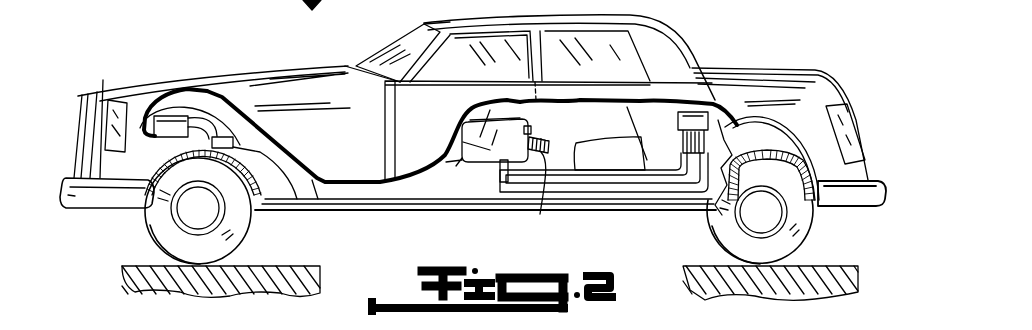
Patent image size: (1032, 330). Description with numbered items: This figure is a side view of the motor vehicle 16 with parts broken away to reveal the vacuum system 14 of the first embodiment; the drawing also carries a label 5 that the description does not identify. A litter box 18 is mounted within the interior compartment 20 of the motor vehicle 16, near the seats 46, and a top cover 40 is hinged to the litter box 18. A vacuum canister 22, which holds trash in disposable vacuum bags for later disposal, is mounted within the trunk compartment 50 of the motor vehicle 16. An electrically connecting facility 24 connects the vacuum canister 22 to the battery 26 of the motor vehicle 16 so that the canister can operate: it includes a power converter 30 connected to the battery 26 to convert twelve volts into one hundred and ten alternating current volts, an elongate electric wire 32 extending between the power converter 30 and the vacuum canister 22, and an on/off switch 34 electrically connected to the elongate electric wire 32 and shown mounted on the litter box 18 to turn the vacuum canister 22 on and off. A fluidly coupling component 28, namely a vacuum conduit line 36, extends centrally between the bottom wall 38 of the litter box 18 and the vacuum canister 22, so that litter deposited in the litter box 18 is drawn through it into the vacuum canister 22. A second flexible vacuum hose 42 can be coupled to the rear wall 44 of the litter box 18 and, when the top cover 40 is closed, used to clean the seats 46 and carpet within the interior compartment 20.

The vehicle 5 is at (812, 64).
The vacuum system 14 is at (573, 212).
The motor vehicle 16 is at (231, 70).
The litter box 18 is at (455, 129).
The interior compartment 20 is at (617, 110).
The vacuum canister 22 is at (698, 111).
The electrically connecting facility 24 is at (320, 206).
The battery 26 is at (142, 117).
The fluidly coupling component 28 is at (515, 190).
The power converter 30 is at (234, 141).
The elongate electric wire 32 is at (371, 205).
The on/off switch 34 is at (529, 126).
The vacuum conduit line 36 is at (662, 179).
The bottom wall 38 is at (445, 162).
The top cover 40 is at (470, 109).
The second flexible vacuum hose 42 is at (577, 142).
The rear wall 44 is at (542, 188).
The seats 46 is at (469, 104).
The trunk compartment 50 is at (720, 122).